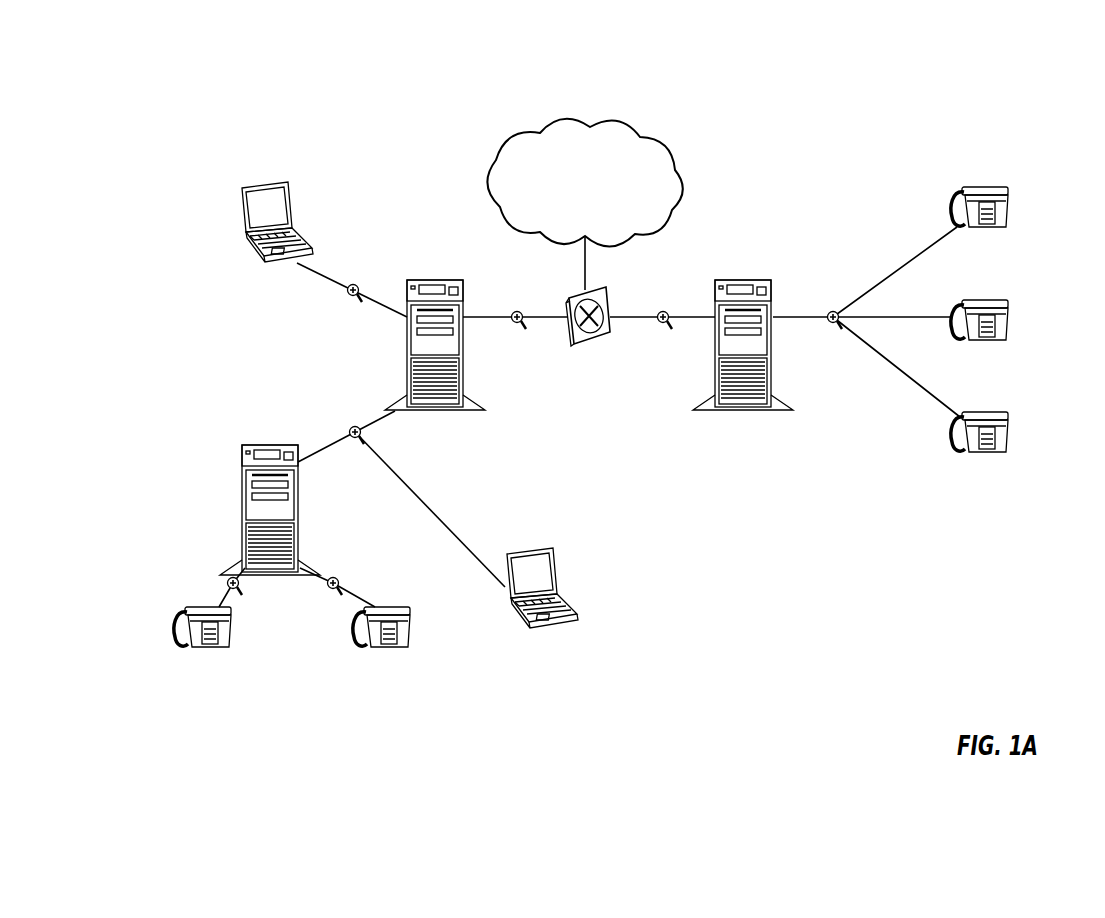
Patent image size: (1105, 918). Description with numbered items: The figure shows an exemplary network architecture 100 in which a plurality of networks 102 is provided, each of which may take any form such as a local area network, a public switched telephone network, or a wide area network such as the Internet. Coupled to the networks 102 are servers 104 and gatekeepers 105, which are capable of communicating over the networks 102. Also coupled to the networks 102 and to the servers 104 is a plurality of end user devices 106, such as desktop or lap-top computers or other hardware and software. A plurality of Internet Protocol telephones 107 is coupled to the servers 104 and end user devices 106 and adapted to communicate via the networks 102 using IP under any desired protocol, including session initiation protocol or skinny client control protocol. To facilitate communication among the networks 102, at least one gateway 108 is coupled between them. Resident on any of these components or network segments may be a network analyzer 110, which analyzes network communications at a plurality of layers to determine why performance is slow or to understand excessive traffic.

The network architecture 100 is at (910, 40).
The networks 102 is at (560, 100).
The servers 104 is at (242, 468).
The gatekeepers 105 is at (447, 280).
The end user devices 106 is at (287, 181).
The Internet Protocol (IP) telephones 107 is at (1008, 212).
The gateway 108 is at (581, 299).
The network analyzer 110 is at (358, 285).